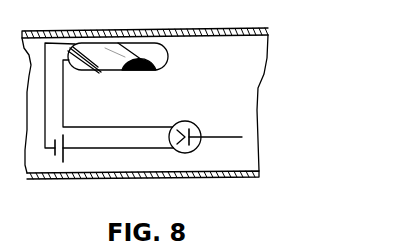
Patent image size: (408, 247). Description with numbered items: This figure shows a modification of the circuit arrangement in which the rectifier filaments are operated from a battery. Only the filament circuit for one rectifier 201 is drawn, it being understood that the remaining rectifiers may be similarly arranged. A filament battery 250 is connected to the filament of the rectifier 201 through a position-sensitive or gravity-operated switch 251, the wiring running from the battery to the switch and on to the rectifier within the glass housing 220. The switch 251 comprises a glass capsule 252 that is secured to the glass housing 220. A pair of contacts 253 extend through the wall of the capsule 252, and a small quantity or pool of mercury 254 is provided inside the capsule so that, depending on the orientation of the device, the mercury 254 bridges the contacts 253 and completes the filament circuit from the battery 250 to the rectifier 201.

The rectifier 201 is at (212, 119).
The glass housing 220 is at (221, 38).
The filament battery 250 is at (63, 155).
The position-sensitive or gravity-operated switch 251 is at (138, 74).
The glass capsule 252 is at (167, 59).
The pair of contacts 253 is at (91, 71).
The pool of mercury 254 is at (152, 68).